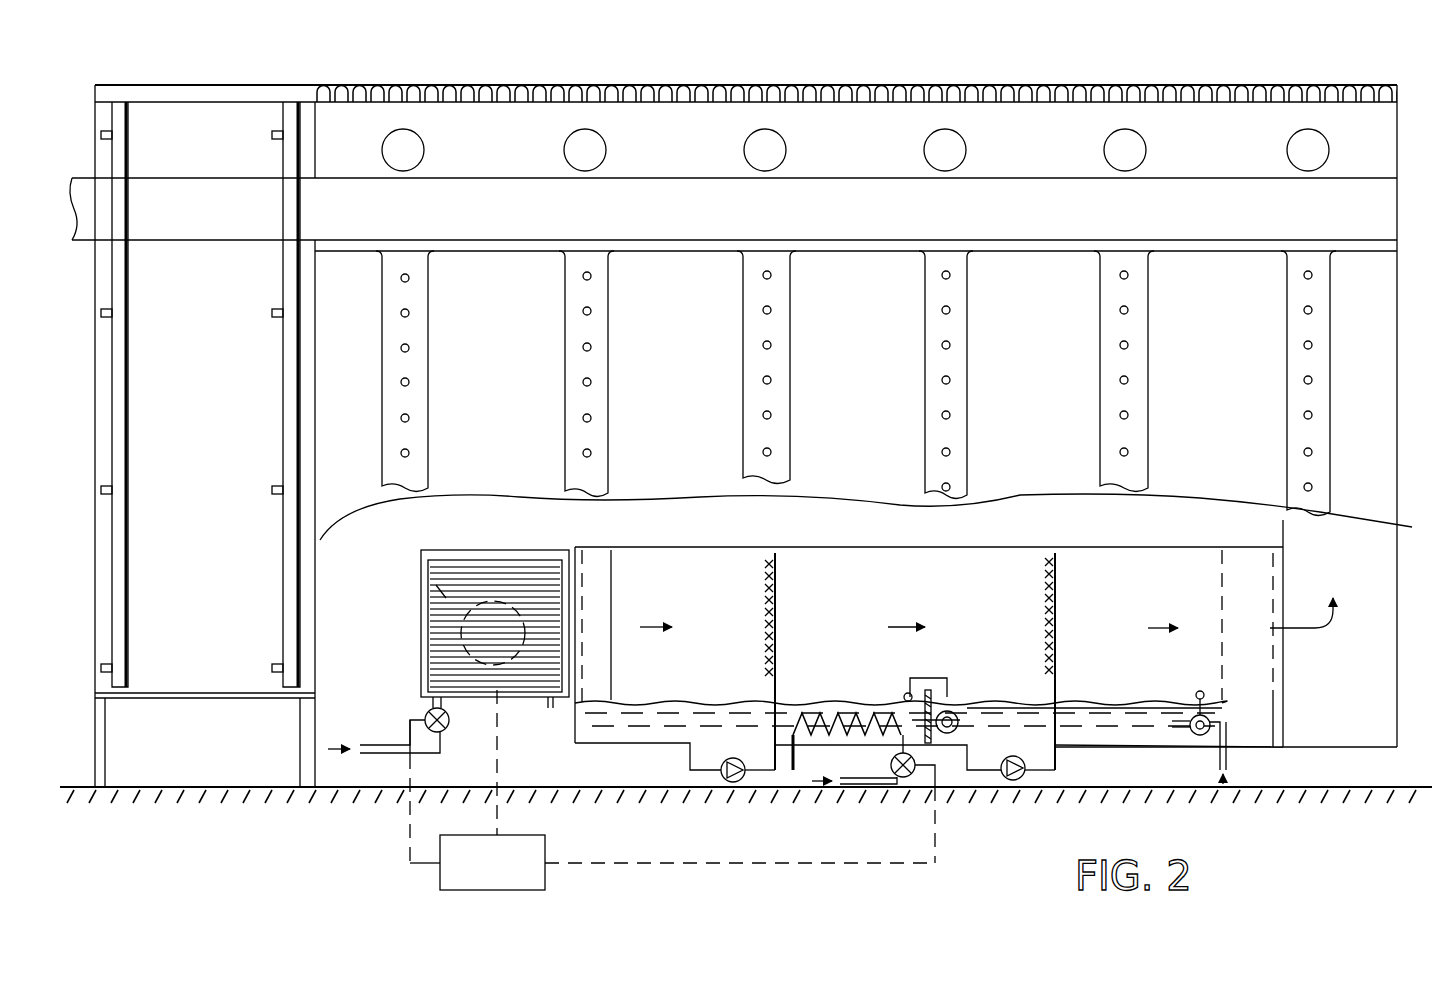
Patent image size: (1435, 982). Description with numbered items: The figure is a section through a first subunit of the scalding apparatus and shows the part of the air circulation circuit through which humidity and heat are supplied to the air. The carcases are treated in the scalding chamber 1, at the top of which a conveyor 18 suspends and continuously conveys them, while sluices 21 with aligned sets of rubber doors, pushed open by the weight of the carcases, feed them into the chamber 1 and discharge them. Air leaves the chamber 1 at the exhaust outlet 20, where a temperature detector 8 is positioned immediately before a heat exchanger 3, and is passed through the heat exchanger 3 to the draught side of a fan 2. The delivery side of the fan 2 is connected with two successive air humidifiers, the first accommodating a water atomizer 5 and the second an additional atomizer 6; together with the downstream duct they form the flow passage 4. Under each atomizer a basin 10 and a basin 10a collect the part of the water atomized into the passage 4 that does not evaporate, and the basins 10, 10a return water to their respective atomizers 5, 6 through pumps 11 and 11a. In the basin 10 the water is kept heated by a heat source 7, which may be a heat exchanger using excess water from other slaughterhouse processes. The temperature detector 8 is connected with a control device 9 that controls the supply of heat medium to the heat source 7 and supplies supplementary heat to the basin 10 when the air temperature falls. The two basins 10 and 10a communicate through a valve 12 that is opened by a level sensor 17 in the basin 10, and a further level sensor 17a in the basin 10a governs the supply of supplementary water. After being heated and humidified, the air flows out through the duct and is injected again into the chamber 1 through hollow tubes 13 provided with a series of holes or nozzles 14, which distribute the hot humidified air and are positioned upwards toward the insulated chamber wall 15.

The scalding chamber 1 is at (503, 405).
The fan 2 is at (485, 590).
The heat exchanger 3 is at (432, 656).
The flow passage 4 is at (925, 575).
The water atomizer 5 is at (764, 582).
The additional atomizer 6 is at (1044, 586).
The heat source 7 is at (818, 732).
The temperature detector 8 is at (500, 686).
The control device 9 is at (538, 848).
The basin 10 is at (626, 722).
The basin 10a is at (1108, 722).
The pump 11 is at (744, 782).
The pump 11a is at (1008, 781).
The valve 12 is at (949, 711).
The hollow tubes 13 is at (782, 134).
The holes or nozzles 14 is at (951, 346).
The insulated chamber wall 15 is at (1073, 90).
The level sensor 17 is at (904, 697).
The level sensor 17a is at (1195, 695).
The conveyor 18 is at (337, 198).
The exhaust outlet 20 is at (438, 590).
The sluices 21 is at (160, 528).